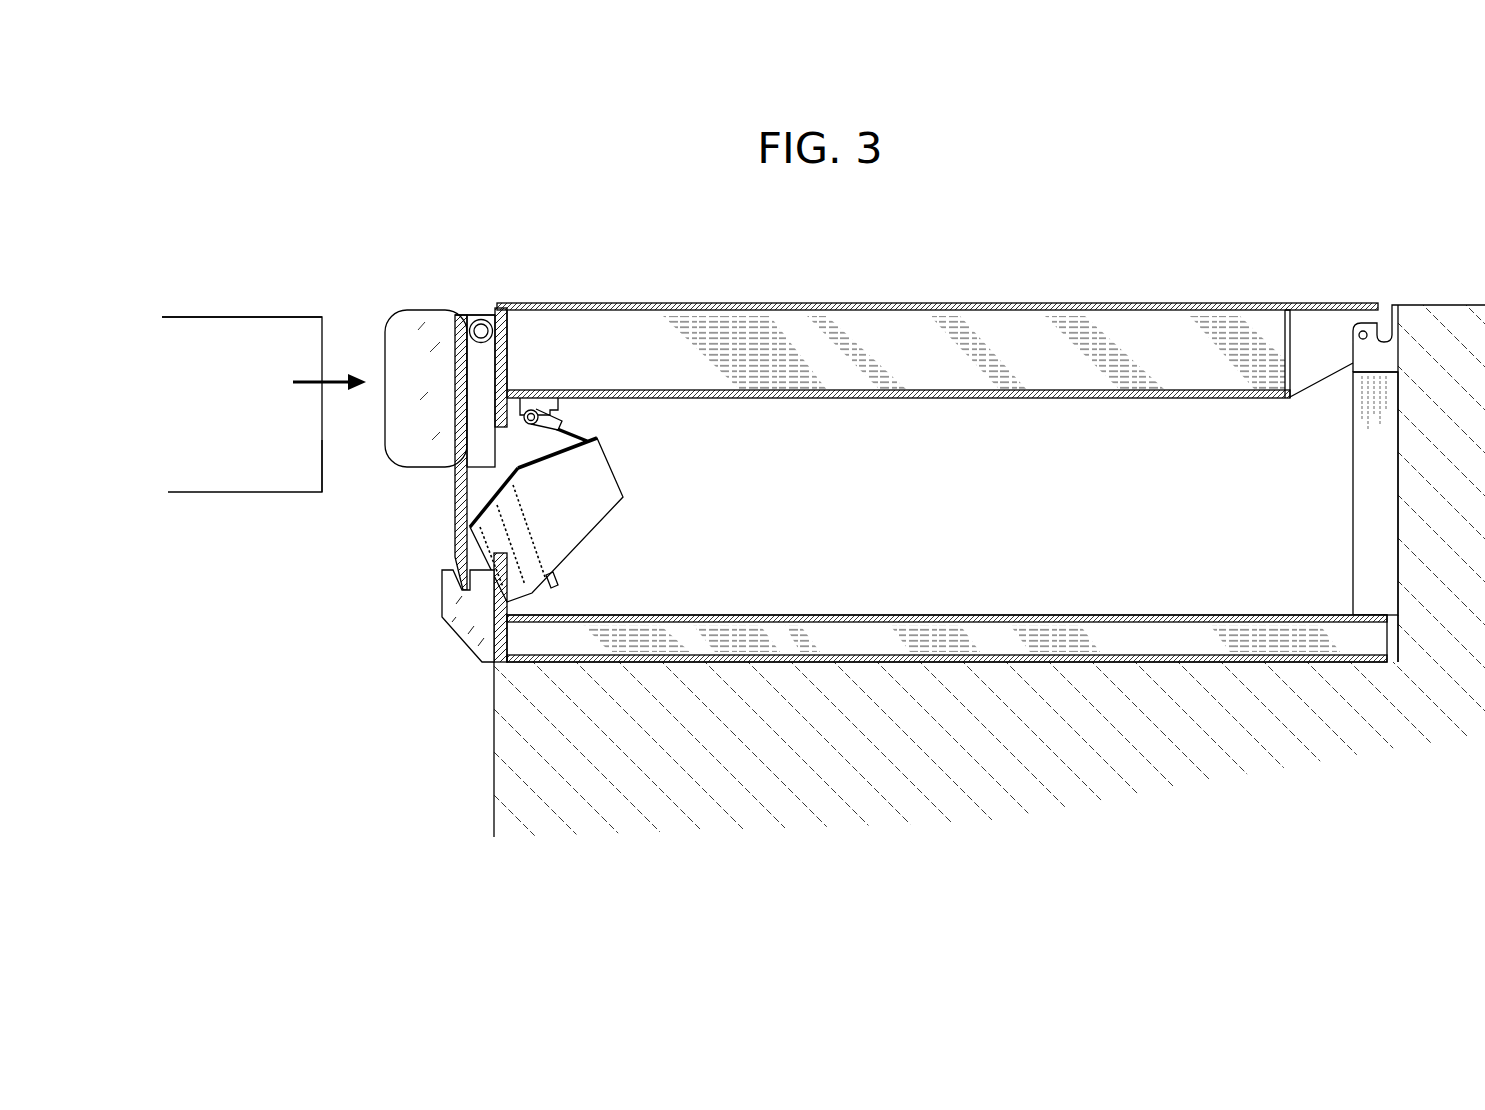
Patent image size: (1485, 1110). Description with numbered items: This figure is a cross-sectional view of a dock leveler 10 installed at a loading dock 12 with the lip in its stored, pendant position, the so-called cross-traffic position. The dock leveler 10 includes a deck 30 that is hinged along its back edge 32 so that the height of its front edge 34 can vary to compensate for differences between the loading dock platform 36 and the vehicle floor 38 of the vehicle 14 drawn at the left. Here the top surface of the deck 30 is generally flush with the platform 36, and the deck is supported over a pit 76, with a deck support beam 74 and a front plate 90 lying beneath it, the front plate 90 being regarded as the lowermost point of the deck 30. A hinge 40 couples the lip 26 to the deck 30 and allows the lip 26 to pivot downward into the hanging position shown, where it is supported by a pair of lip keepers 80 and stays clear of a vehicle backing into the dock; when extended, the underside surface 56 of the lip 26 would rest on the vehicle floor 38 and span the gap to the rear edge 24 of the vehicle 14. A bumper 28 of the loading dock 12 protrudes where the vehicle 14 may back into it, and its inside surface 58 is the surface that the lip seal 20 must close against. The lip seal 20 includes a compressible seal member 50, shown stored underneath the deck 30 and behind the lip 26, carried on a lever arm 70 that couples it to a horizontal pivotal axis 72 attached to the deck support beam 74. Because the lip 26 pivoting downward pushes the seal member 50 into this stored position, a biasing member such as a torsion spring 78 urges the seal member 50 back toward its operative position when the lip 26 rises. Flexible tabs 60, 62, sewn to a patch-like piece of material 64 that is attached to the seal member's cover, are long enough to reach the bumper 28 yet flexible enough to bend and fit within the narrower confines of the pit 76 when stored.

The dock leveler 10 is at (1060, 255).
The loading dock 12 is at (350, 743).
The vehicle 14 is at (265, 493).
The lip seal 20 is at (647, 528).
The rear edge 24 is at (323, 466).
The lip 26 is at (453, 500).
The bumper 28 is at (403, 308).
The deck 30 is at (877, 300).
The back edge 32 is at (1387, 300).
The front edge 34 is at (490, 307).
The loading dock platform 36 is at (1438, 305).
The vehicle floor 38 is at (252, 315).
The hinge 40 is at (478, 318).
The seal member 50 is at (620, 467).
The underside surface 56 is at (478, 411).
The inside surface 58 is at (403, 366).
The flexible tab 60 is at (482, 530).
The flexible tab 62 is at (517, 560).
The patch-like piece of material 64 is at (560, 572).
The lever arm 70 is at (590, 435).
The horizontal pivotal axis 72 is at (527, 407).
The deck support beam 74 is at (866, 398).
The pit 76 is at (1142, 662).
The torsion spring 78 is at (552, 424).
The lip keeper 80 is at (443, 582).
The front plate 90 is at (508, 347).